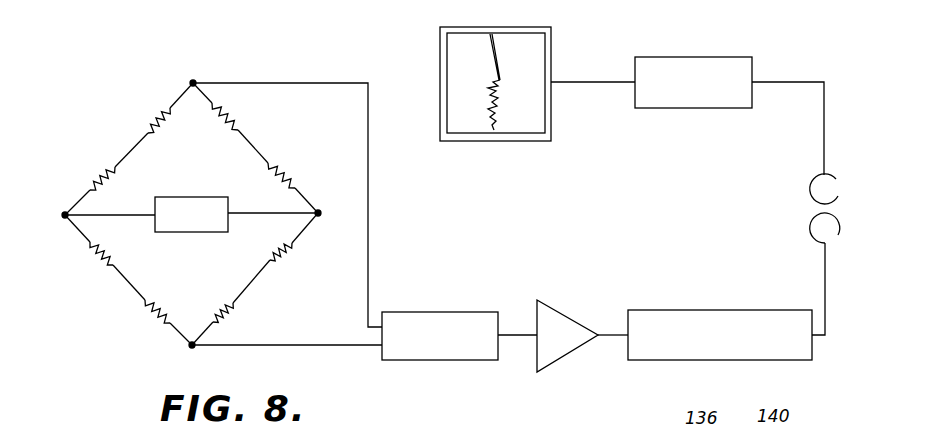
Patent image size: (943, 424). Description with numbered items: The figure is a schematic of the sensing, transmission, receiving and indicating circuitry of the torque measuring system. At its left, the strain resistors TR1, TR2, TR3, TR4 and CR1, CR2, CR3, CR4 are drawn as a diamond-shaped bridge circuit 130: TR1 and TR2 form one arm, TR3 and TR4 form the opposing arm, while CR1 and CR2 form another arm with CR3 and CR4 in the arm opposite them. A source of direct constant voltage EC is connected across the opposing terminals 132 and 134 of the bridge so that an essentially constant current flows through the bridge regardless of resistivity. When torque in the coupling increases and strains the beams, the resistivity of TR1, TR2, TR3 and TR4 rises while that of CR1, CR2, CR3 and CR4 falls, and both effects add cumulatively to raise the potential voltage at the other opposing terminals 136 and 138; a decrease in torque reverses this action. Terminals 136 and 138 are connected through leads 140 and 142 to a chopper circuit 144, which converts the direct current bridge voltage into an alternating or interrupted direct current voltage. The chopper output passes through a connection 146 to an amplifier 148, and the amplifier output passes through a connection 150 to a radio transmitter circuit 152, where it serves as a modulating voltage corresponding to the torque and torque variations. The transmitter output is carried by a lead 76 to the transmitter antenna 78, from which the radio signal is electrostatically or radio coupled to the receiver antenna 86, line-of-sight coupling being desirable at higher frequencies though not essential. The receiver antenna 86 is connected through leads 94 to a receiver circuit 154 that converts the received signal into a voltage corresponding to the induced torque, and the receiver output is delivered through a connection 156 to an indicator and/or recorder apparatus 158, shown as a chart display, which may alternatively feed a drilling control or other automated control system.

The bridge circuit 130 is at (211, 172).
The terminal of the bridge 132 is at (63, 216).
The terminal of the bridge 134 is at (318, 213).
The voltage terminal of the bridge 136 is at (193, 83).
The voltage terminal of the bridge 138 is at (190, 347).
The lead 140 is at (368, 240).
The lead 142 is at (305, 345).
The chopper circuit 144 is at (473, 312).
The connection 146 is at (517, 338).
The amplifier 148 is at (556, 306).
The connection 150 is at (613, 338).
The radio transmitter circuit 152 is at (707, 310).
The receiver circuit 154 is at (735, 108).
The connection 156 is at (604, 83).
The indicator and/or recorder apparatus 158 is at (532, 139).
The lead 76 is at (826, 280).
The antenna 78 is at (810, 230).
The receiver antenna 86 is at (810, 190).
The leads 94 is at (788, 80).
The strain resistor TR1 is at (95, 182).
The strain resistor TR2 is at (148, 127).
The strain resistor TR3 is at (286, 246).
The strain resistor TR4 is at (233, 309).
The strain resistor CR1 is at (238, 120).
The strain resistor CR2 is at (282, 168).
The strain resistor CR3 is at (96, 262).
The strain resistor CR4 is at (152, 318).
The source of direct constant voltage EC is at (193, 214).